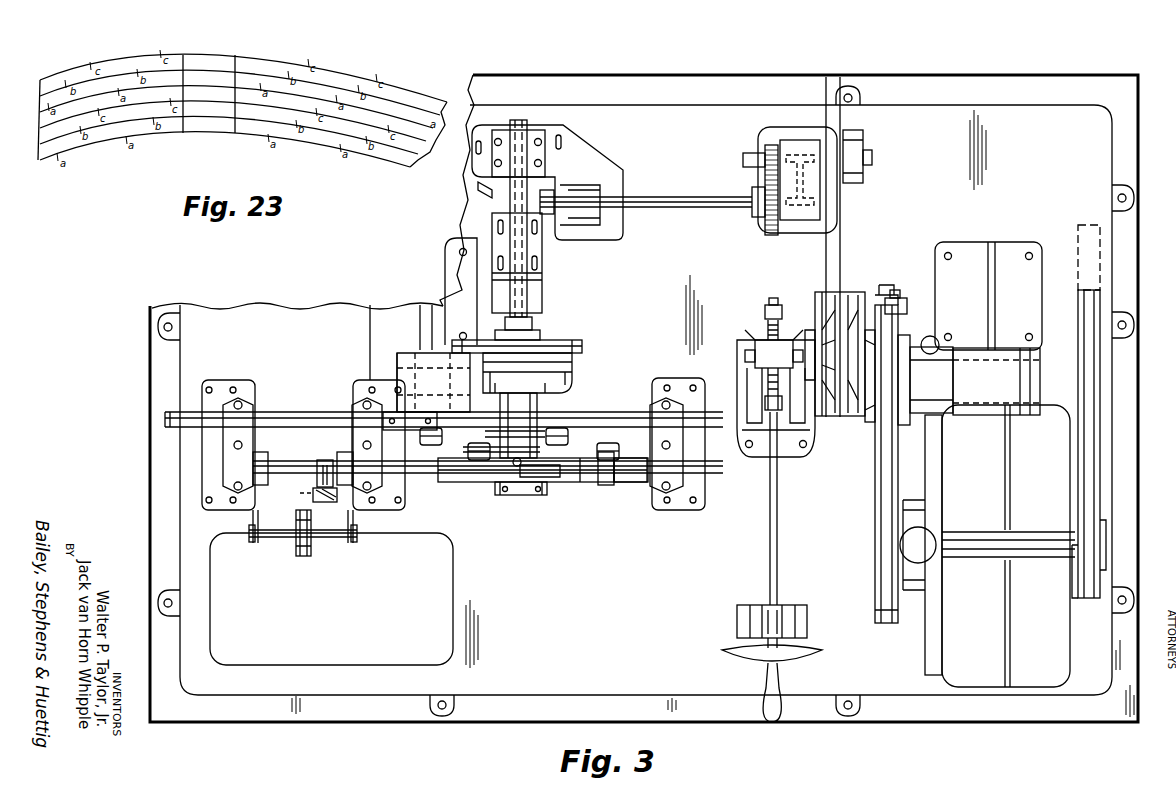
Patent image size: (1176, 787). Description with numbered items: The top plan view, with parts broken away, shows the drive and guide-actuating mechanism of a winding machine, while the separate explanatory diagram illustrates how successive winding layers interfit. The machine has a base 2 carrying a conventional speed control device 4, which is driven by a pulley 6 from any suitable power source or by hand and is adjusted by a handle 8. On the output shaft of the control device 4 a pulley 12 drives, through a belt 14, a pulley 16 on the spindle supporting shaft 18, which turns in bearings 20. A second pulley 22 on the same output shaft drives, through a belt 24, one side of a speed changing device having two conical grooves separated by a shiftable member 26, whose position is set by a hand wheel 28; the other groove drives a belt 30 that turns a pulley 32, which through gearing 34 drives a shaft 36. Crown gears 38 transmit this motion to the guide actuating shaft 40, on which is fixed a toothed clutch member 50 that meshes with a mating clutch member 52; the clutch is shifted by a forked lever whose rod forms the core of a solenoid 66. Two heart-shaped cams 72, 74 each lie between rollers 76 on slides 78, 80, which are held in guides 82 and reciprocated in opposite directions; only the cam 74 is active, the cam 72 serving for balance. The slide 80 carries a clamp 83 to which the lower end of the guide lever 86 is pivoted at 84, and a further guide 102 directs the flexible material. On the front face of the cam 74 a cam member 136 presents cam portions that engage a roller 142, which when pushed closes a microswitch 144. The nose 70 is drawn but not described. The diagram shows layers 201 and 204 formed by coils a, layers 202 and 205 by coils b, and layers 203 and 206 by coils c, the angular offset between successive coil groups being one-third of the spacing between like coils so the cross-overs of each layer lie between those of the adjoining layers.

In FIG. 3, the base 2 is at (614, 596).
In FIG. 3, the speed control device 4 is at (1041, 668).
In FIG. 3, the pulley 6 is at (1102, 503).
In FIG. 3, the handle 8 is at (926, 540).
In FIG. 3, the pulley 12 is at (898, 477).
In FIG. 3, the belt 14 is at (887, 445).
In FIG. 3, the pulley 16 is at (896, 300).
In FIG. 3, the spindle supporting shaft 18 is at (871, 400).
In FIG. 3, the bearings 20 is at (398, 352).
In FIG. 3, the second pulley 22 is at (858, 560).
In FIG. 3, the belt 24 is at (869, 456).
In FIG. 3, the shiftable member 26 is at (840, 300).
In FIG. 3, the hand wheel 28 is at (796, 657).
In FIG. 3, the belt 30 is at (826, 264).
In FIG. 3, the pulley 32 is at (846, 215).
In FIG. 3, the gearing 34 is at (776, 236).
In FIG. 3, the shaft 36 is at (690, 208).
In FIG. 3, the crown gears 38 is at (493, 186).
In FIG. 3, the guide actuating shaft 40 is at (528, 300).
In FIG. 3, the clutch member 50 is at (568, 341).
In FIG. 3, the clutch member 52 is at (573, 361).
In FIG. 3, the solenoid 66 is at (543, 304).
In FIG. 3, the spindle 70 is at (562, 387).
In FIG. 3, the heart-shaped cam 72 is at (498, 496).
In FIG. 3, the heart-shaped cam 74 is at (568, 455).
In FIG. 3, the rollers 76 is at (568, 442).
In FIG. 3, the slide 78 is at (288, 412).
In FIG. 3, the slide 80 is at (284, 463).
In FIG. 3, the guides 82 is at (228, 440).
In FIG. 3, the clamp 83 is at (323, 462).
In FIG. 3, the pivot 84 is at (327, 503).
In FIG. 3, the guide lever 86 is at (292, 492).
In FIG. 3, the guide 102 is at (309, 546).
In FIG. 3, the cam member 136 is at (552, 478).
In FIG. 3, the roller 142 is at (518, 468).
In FIG. 3, the microswitch 144 is at (514, 496).
In FIG. 23, the layer 201 is at (207, 150).
In FIG. 23, the layer 202 is at (211, 135).
In FIG. 23, the layer 203 is at (215, 121).
In FIG. 23, the layer 204 is at (218, 107).
In FIG. 23, the layer 205 is at (222, 92).
In FIG. 23, the layer 206 is at (225, 78).